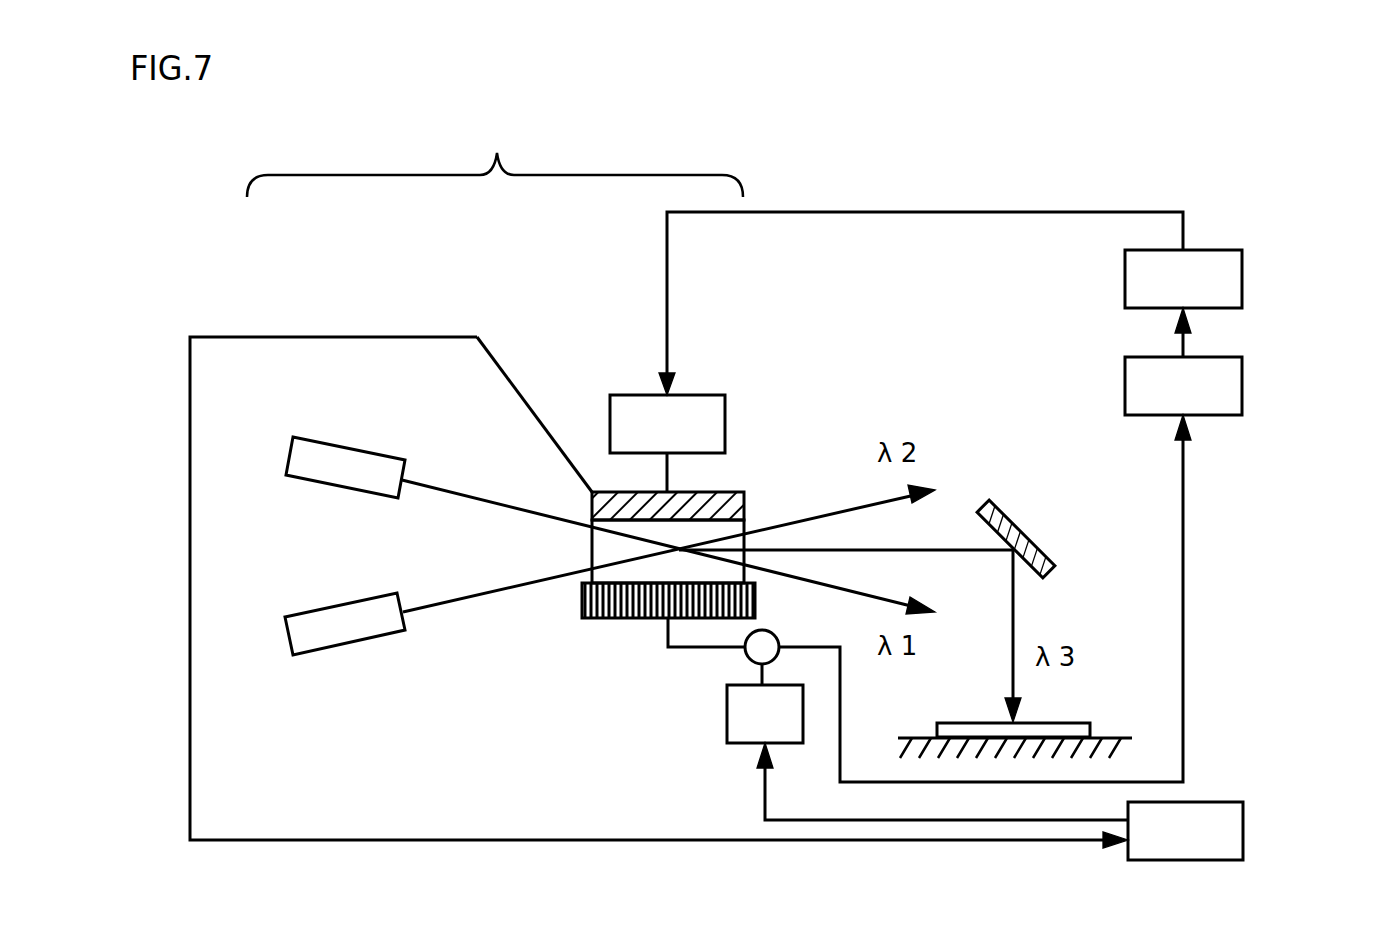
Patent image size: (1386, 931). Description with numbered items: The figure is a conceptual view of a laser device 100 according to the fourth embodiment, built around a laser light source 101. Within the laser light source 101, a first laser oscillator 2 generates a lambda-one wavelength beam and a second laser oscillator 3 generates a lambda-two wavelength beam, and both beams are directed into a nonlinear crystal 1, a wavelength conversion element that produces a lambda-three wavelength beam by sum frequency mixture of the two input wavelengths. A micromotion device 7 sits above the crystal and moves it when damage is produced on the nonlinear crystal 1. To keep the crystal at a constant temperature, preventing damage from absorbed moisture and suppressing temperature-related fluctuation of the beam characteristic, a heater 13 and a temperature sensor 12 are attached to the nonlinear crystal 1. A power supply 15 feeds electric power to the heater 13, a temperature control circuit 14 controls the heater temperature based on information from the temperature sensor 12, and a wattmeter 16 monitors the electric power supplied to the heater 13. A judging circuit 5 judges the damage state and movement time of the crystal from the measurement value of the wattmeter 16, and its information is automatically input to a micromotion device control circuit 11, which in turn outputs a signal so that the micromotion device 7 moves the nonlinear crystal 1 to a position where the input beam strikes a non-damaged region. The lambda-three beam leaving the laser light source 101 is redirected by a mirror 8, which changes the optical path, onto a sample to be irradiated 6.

The laser device 100 is at (967, 135).
The laser light source 101 is at (441, 148).
The nonlinear crystal 1 is at (744, 492).
The first laser oscillator 2 is at (353, 446).
The second laser oscillator 3 is at (358, 598).
The judging circuit 5 is at (1242, 357).
The sample to be irradiated 6 is at (1073, 723).
The micromotion device 7 is at (725, 395).
The mirror 8 is at (1012, 518).
The micromotion device control circuit 11 is at (1242, 285).
The temperature sensor 12 is at (717, 530).
The heater 13 is at (582, 618).
The temperature control circuit 14 is at (1243, 802).
The power supply 15 is at (727, 735).
The wattmeter 16 is at (745, 656).